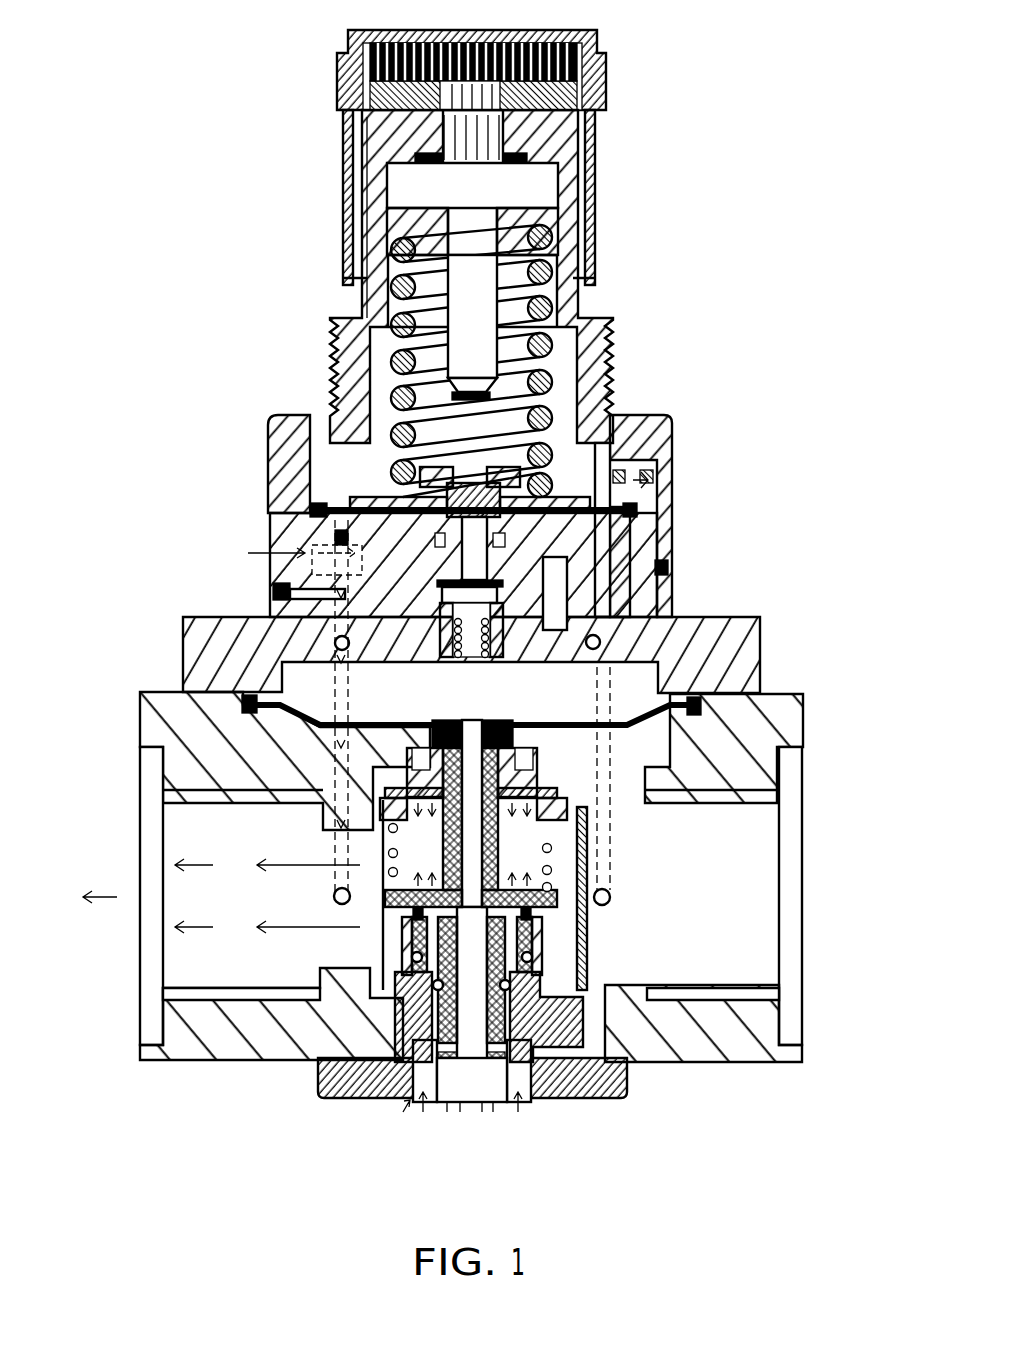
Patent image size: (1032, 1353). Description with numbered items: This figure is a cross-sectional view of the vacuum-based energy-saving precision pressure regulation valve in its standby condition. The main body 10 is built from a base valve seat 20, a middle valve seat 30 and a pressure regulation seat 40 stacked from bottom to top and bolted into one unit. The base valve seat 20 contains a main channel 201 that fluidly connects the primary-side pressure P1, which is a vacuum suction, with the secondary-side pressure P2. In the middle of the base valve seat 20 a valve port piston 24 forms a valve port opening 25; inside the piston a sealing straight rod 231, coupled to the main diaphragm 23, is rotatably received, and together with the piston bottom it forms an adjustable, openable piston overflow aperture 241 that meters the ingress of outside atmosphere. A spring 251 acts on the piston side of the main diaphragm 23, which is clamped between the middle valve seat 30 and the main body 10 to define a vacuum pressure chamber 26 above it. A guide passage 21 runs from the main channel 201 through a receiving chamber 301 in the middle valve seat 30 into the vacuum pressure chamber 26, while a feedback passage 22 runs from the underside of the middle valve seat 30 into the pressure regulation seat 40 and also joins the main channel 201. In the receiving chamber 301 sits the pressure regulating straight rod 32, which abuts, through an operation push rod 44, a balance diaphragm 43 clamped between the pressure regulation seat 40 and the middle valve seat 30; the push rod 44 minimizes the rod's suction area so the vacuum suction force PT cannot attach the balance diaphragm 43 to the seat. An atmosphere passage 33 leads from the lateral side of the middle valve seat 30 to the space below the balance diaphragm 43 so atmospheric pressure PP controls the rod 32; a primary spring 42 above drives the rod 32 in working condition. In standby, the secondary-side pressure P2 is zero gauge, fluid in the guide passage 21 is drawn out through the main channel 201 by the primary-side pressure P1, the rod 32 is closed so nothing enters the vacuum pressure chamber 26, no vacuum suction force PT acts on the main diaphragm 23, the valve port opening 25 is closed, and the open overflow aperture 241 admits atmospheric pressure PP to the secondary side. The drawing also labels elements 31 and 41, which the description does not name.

The main body 10 is at (611, 283).
The base valve seat 20 is at (803, 720).
The main channel 201 is at (262, 1000).
The guide passage 21 is at (330, 700).
The feedback passage 22 is at (610, 818).
The main diaphragm 23 is at (385, 690).
The sealing straight rod 231 is at (415, 752).
The valve port piston 24 is at (575, 893).
The piston overflow aperture 241 is at (505, 1045).
The valve port opening 25 is at (393, 845).
The spring 251 is at (553, 868).
The vacuum pressure chamber 26 is at (407, 700).
The middle valve seat 30 is at (765, 620).
The receiving chamber 301 is at (320, 560).
The main diaphragm 31 is at (700, 657).
The pressure regulating straight rod 32 is at (445, 535).
The atmosphere passage 33 is at (330, 520).
The pressure regulation seat 40 is at (665, 414).
The adjusting knob 41 is at (345, 52).
The primary spring 42 is at (388, 345).
The balance diaphragm 43 is at (390, 497).
The operation push rod 44 is at (450, 450).
The primary-side pressure P1 is at (160, 873).
The secondary-side pressure P2 is at (783, 877).
The atmospheric pressure PP is at (320, 548).
The vacuum suction force PT is at (570, 578).